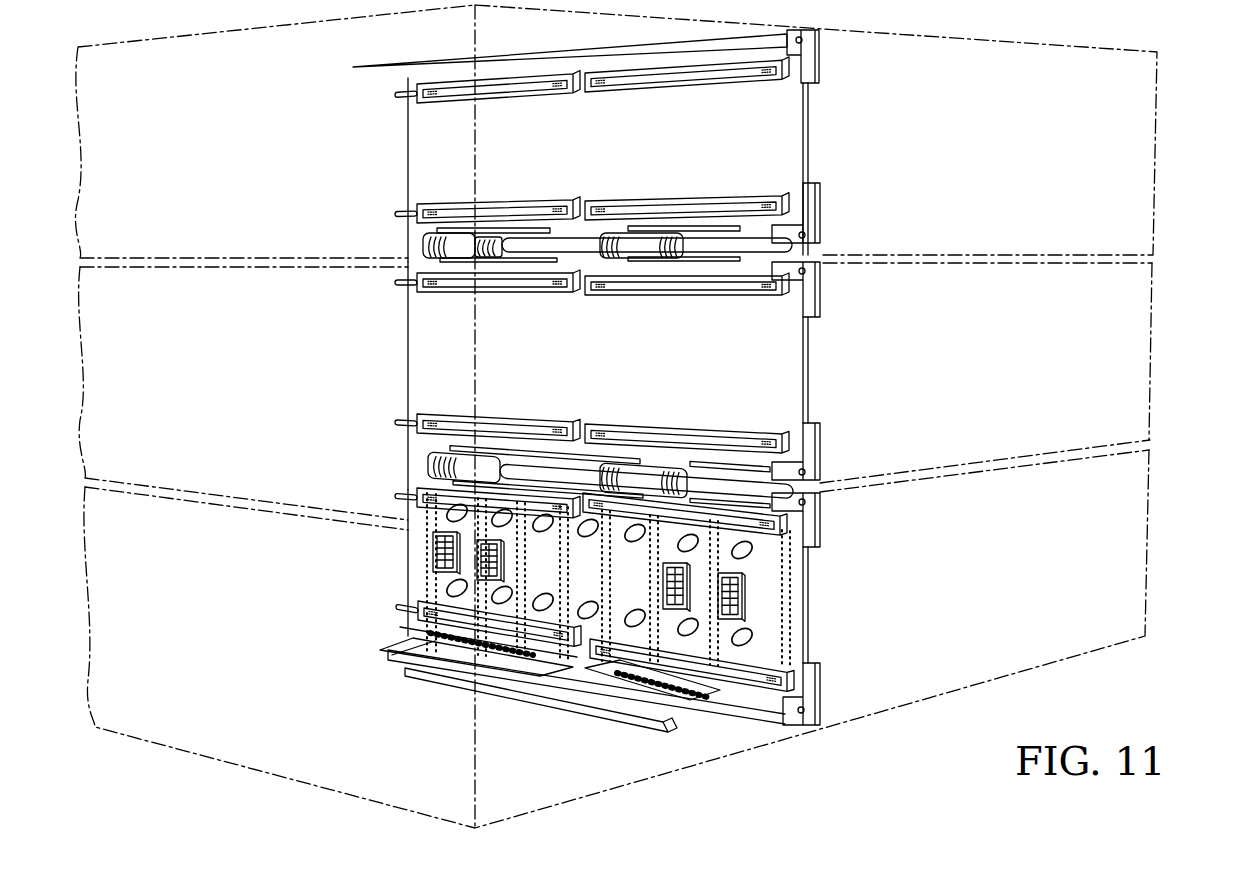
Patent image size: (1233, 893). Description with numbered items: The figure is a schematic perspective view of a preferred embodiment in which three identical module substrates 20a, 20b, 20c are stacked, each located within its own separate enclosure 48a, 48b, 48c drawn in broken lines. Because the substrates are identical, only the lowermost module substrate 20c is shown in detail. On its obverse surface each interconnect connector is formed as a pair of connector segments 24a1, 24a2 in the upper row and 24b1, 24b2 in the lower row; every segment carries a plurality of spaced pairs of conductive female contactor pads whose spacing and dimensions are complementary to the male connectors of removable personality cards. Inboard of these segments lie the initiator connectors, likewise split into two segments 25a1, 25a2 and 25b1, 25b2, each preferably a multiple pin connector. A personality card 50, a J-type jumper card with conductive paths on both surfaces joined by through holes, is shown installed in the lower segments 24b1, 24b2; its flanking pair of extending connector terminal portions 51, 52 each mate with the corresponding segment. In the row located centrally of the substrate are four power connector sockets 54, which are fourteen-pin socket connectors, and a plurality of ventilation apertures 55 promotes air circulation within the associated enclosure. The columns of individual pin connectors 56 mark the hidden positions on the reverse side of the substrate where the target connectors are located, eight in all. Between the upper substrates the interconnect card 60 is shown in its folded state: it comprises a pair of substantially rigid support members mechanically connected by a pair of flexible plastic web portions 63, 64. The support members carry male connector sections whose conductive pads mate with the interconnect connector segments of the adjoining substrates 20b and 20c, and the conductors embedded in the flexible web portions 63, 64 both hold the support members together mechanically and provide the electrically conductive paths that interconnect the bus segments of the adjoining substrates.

The enclosure 48a is at (1155, 160).
The enclosure 48b is at (1150, 345).
The enclosure 48c is at (1150, 557).
The module substrate 20a is at (796, 123).
The module substrate 20b is at (796, 340).
The module substrate 20c is at (830, 590).
The interconnect card 60 is at (428, 242).
The flexible plastic web portion 63 is at (462, 252).
The flexible plastic web portion 64 is at (652, 258).
The connector segment 24a1 is at (520, 463).
The connector segment 24a2 is at (705, 483).
The initiator connector segment 25a1 is at (429, 469).
The initiator connector segment 25a2 is at (820, 497).
The initiator connector segment 25b1 is at (435, 606).
The initiator connector segment 25b2 is at (800, 663).
The connector segment 24b1 is at (430, 662).
The connector segment 24b2 is at (660, 676).
The personality card 50 is at (614, 712).
The connector terminal portion 51 is at (680, 718).
The connector terminal portion 52 is at (510, 652).
The power connector socket 54 is at (477, 557).
The ventilation aperture 55 is at (455, 513).
The individual pin connector 56 is at (600, 640).